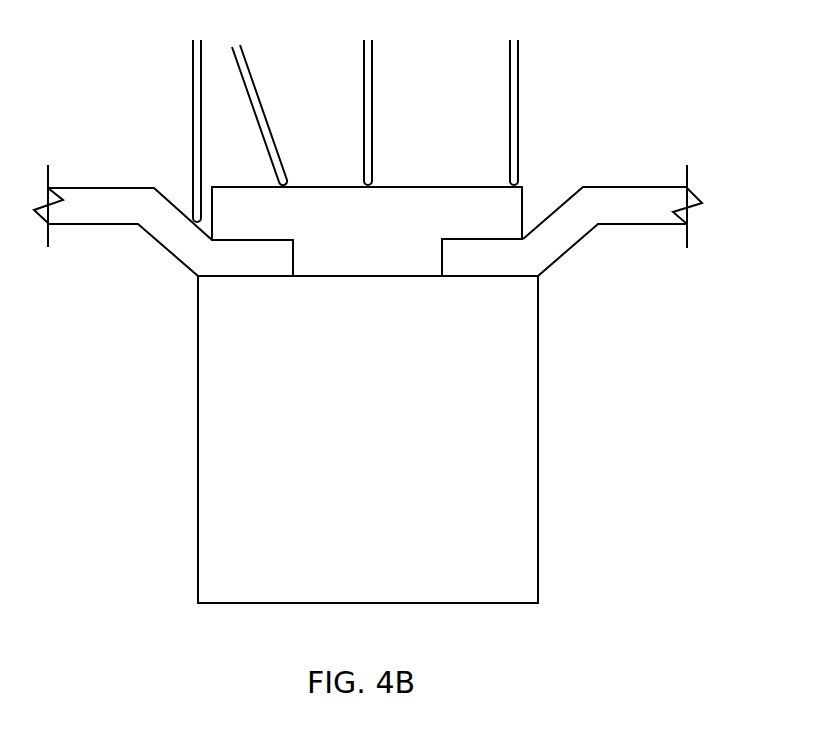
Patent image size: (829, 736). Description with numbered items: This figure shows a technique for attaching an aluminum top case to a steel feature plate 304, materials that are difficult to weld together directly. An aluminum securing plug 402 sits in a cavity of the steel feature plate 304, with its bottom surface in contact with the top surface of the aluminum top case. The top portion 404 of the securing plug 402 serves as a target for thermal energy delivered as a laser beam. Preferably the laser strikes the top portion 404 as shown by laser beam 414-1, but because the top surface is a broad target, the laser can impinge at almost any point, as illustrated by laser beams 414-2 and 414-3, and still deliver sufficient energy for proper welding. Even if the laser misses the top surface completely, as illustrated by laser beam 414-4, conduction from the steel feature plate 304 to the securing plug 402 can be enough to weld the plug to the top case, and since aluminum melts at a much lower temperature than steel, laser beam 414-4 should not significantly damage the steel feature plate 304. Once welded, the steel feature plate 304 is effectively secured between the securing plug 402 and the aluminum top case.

The steel feature plate 304 is at (612, 220).
The securing plug 402 is at (367, 231).
The top portion 404 is at (368, 439).
The laser beam 414-1 is at (373, 92).
The laser beam 414-2 is at (542, 112).
The laser beam 414-3 is at (267, 115).
The laser beam 414-4 is at (165, 131).